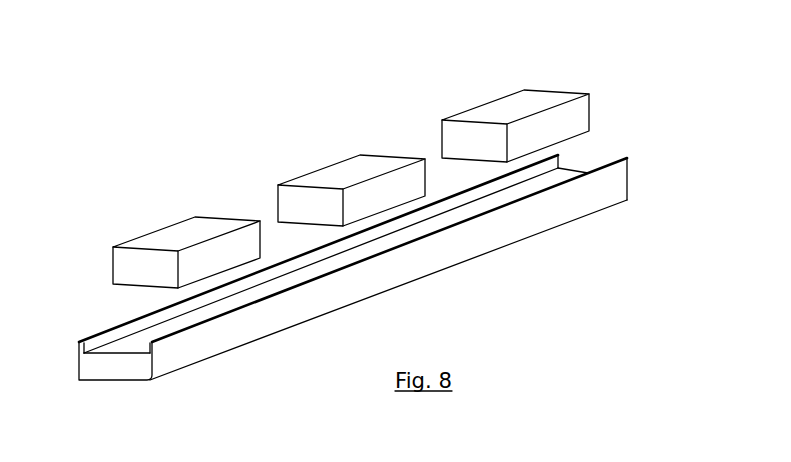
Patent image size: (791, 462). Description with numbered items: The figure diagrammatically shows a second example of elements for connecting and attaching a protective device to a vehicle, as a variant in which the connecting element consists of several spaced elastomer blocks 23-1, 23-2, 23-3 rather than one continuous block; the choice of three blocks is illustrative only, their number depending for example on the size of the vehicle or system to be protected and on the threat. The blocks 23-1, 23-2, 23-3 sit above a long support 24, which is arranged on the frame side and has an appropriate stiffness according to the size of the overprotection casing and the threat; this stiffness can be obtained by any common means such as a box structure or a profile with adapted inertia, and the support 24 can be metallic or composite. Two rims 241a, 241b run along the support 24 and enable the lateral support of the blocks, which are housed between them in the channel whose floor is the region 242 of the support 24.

The connecting element block 23-1 is at (182, 238).
The connecting element block 23-2 is at (350, 175).
The connecting element block 23-3 is at (517, 110).
The support 24 is at (337, 300).
The rim 241a is at (100, 338).
The rim 241b is at (153, 349).
The groove bottom of rail 242 is at (118, 354).